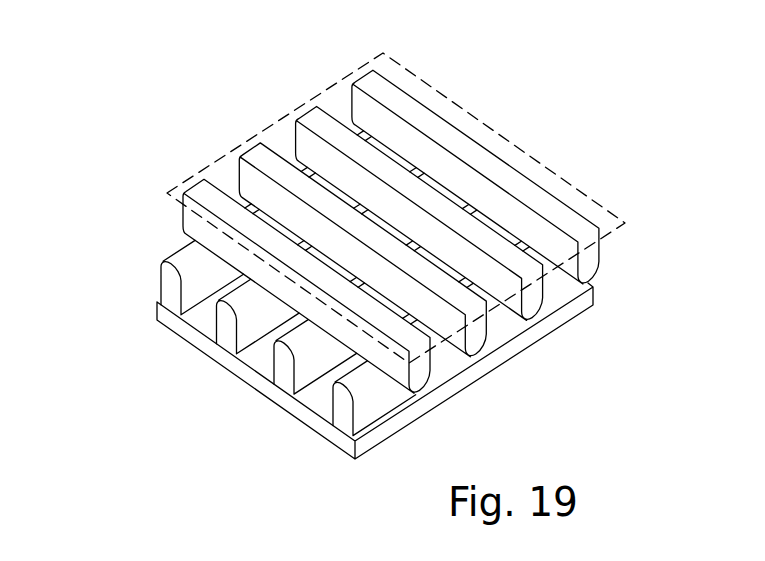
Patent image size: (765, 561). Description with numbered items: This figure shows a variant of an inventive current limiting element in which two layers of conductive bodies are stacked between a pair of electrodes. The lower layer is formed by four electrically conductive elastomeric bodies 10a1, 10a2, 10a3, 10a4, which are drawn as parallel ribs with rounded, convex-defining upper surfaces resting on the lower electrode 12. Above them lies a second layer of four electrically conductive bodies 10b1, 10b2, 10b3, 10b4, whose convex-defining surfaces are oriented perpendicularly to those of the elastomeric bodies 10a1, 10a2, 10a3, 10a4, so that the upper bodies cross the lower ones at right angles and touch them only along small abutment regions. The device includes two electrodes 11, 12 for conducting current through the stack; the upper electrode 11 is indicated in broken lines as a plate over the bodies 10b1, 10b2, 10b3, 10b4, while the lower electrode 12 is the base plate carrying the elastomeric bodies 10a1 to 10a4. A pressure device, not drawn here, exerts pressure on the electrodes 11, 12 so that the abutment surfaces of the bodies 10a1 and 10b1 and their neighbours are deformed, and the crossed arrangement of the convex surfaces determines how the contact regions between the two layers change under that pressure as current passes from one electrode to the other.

The electrically conductive elastomeric body 10a1 is at (336, 416).
The electrically conductive elastomeric body 10a2 is at (250, 382).
The electrically conductive elastomeric body 10a3 is at (219, 332).
The electrically conductive elastomeric body 10a4 is at (165, 289).
The electrically conductive body 10b1 is at (201, 188).
The electrically conductive body 10b2 is at (257, 153).
The electrically conductive body 10b3 is at (313, 117).
The electrically conductive body 10b4 is at (366, 72).
The electrode 11 is at (443, 92).
The electrode 12 is at (500, 358).